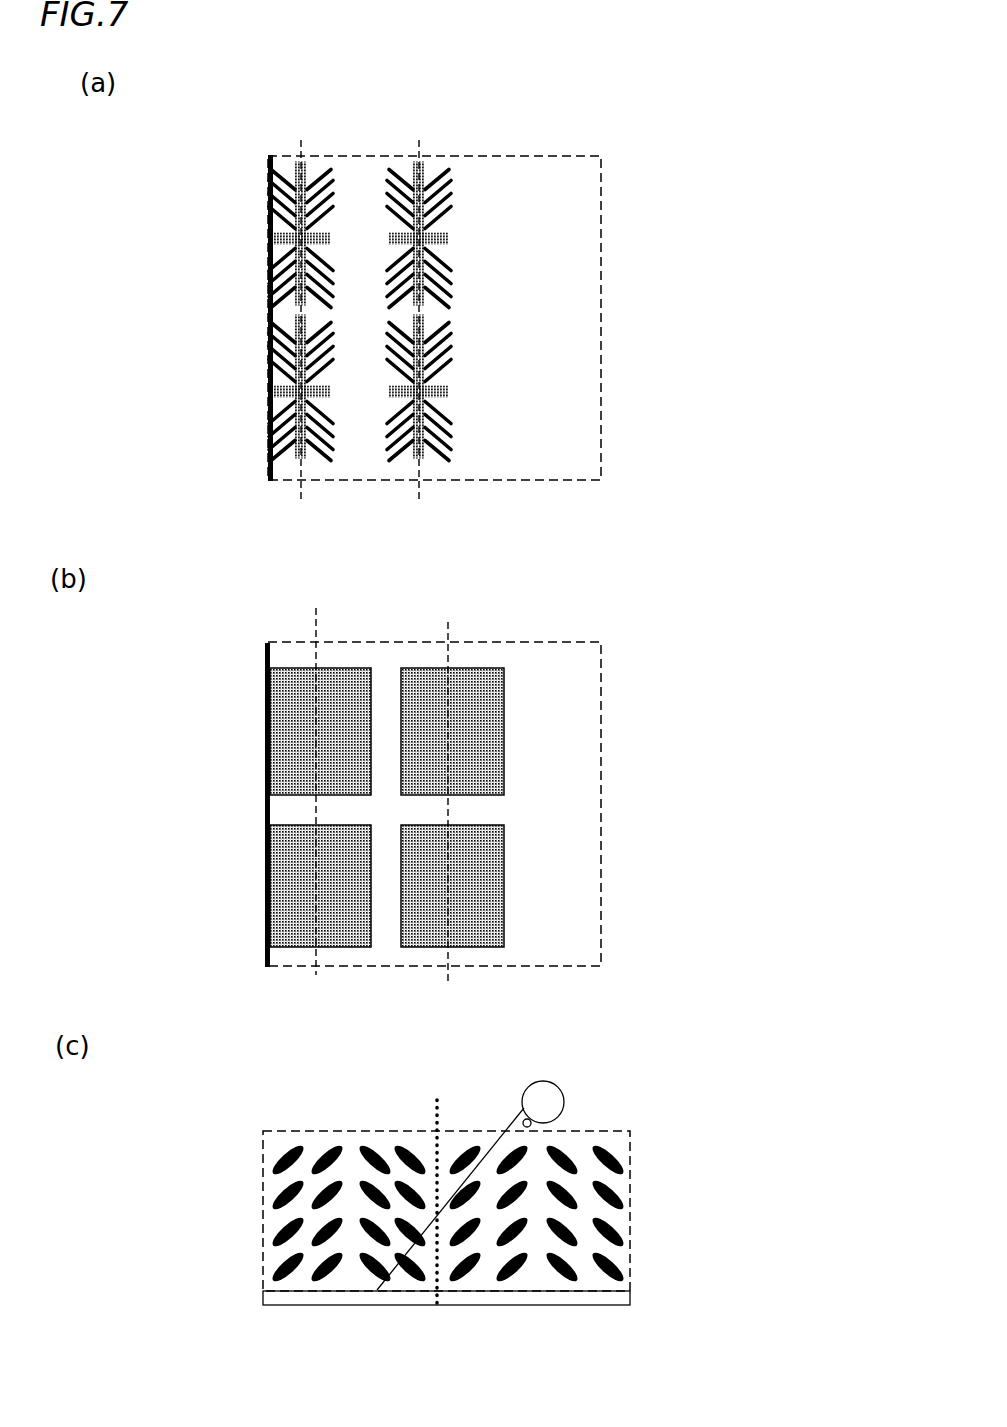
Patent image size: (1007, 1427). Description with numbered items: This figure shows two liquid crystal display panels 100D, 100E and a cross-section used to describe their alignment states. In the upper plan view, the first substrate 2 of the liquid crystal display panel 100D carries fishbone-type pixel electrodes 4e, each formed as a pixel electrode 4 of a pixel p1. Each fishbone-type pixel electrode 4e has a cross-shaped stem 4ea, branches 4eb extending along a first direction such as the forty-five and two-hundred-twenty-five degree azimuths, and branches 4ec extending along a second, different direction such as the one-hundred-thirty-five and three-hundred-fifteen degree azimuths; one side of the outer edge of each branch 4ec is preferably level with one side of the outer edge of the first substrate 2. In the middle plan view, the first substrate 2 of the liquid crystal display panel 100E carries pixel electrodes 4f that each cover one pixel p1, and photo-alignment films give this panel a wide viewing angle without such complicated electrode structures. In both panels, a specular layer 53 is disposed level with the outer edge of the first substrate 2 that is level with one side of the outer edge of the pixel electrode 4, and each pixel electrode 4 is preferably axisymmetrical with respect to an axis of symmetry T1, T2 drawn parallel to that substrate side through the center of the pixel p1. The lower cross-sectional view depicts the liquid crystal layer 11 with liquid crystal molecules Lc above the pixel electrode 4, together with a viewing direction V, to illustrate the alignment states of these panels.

The specular layer 53 is at (268, 265).
The first substrate 2 is at (590, 347).
The axis of symmetry T1 is at (310, 570).
The axis of symmetry T2 is at (436, 574).
The pixel p1 is at (432, 146).
The fishbone-type pixel electrode 4e is at (503, 337).
The stem 4ea is at (445, 398).
The branches 4eb is at (450, 328).
The branches 4ec is at (437, 443).
The pixel electrode 4f is at (478, 925).
The liquid crystal display panel 100D is at (704, 251).
The liquid crystal display panel 100E is at (654, 677).
The liquid crystal layer 11 is at (502, 1201).
The liquid crystal molecule Lc is at (618, 1163).
The pixel electrode 4 is at (622, 1297).
The viewing direction V is at (555, 1092).